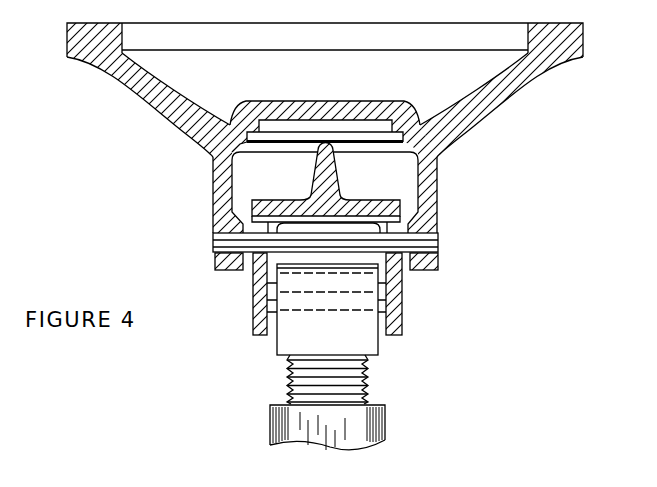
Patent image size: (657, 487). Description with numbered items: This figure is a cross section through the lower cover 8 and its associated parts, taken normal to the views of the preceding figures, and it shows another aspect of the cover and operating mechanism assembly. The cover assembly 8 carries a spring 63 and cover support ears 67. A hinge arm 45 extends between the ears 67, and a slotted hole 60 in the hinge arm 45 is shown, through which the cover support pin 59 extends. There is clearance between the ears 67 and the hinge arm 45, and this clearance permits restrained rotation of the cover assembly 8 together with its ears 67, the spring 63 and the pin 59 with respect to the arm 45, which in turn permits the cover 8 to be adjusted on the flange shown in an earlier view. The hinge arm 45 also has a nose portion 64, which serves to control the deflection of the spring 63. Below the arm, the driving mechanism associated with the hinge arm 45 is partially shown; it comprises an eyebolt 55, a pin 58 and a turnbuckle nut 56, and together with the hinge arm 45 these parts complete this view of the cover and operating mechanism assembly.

The lower cover 8 is at (583, 37).
The cover support ears 67 is at (440, 178).
The spring 63 is at (280, 143).
The nose portion 64 is at (338, 175).
The cover support pin 59 is at (438, 243).
The slotted hole 60 is at (393, 263).
The hinge arm 45 is at (403, 322).
The pin 58 is at (273, 322).
The eyebolt 55 is at (370, 373).
The turnbuckle nut 56 is at (386, 413).